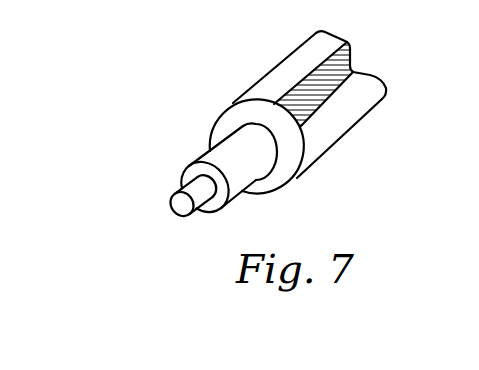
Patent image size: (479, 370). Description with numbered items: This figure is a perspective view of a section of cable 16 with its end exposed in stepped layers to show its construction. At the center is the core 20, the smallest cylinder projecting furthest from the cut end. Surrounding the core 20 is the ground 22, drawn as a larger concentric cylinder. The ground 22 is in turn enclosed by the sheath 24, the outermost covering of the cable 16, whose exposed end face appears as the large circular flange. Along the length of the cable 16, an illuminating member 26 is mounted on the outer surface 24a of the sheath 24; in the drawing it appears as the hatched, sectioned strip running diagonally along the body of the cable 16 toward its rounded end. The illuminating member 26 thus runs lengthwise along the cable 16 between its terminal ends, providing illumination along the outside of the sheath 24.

The cable 16 is at (330, 152).
The core 20 is at (163, 200).
The ground 22 is at (186, 158).
The sheath 24 is at (207, 113).
The outer surface of sheath 24a is at (373, 91).
The illuminating member 26 is at (307, 66).